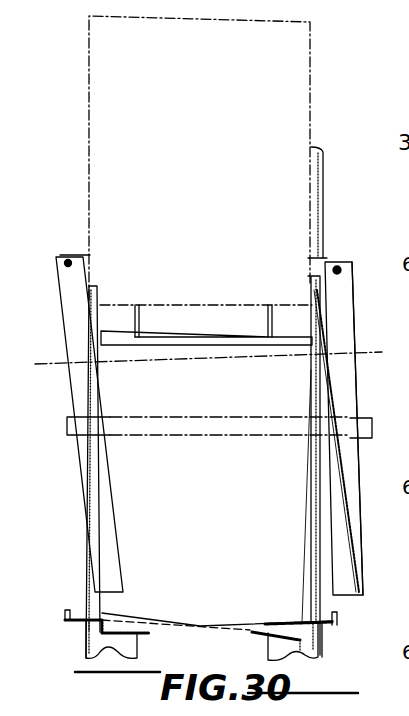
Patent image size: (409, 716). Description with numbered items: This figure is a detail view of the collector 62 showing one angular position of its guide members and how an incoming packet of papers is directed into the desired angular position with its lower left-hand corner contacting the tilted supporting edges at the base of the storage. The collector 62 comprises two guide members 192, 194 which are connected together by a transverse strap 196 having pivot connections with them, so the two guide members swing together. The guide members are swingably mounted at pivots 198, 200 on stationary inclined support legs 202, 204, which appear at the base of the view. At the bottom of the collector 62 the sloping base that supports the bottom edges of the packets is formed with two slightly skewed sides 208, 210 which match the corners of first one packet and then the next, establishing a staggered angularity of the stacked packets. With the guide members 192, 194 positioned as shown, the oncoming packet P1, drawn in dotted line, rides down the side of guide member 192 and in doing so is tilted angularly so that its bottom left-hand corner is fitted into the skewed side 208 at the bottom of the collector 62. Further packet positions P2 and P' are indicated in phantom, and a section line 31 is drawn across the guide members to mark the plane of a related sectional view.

The swingable mounting 198 is at (70, 259).
The swingable mounting 200 is at (339, 265).
The guide member 194 is at (348, 395).
The guide member 192 is at (78, 421).
The transverse strap 196 is at (212, 438).
The collector 62 is at (79, 486).
The support leg 202 is at (87, 645).
The skewed side 208 is at (137, 647).
The skewed side 210 is at (270, 648).
The support leg 204 is at (322, 656).
The section line 31 is at (37, 343).
The oncoming packet P1 is at (311, 109).
The panel position P2 is at (302, 600).
The panel position P' is at (352, 441).